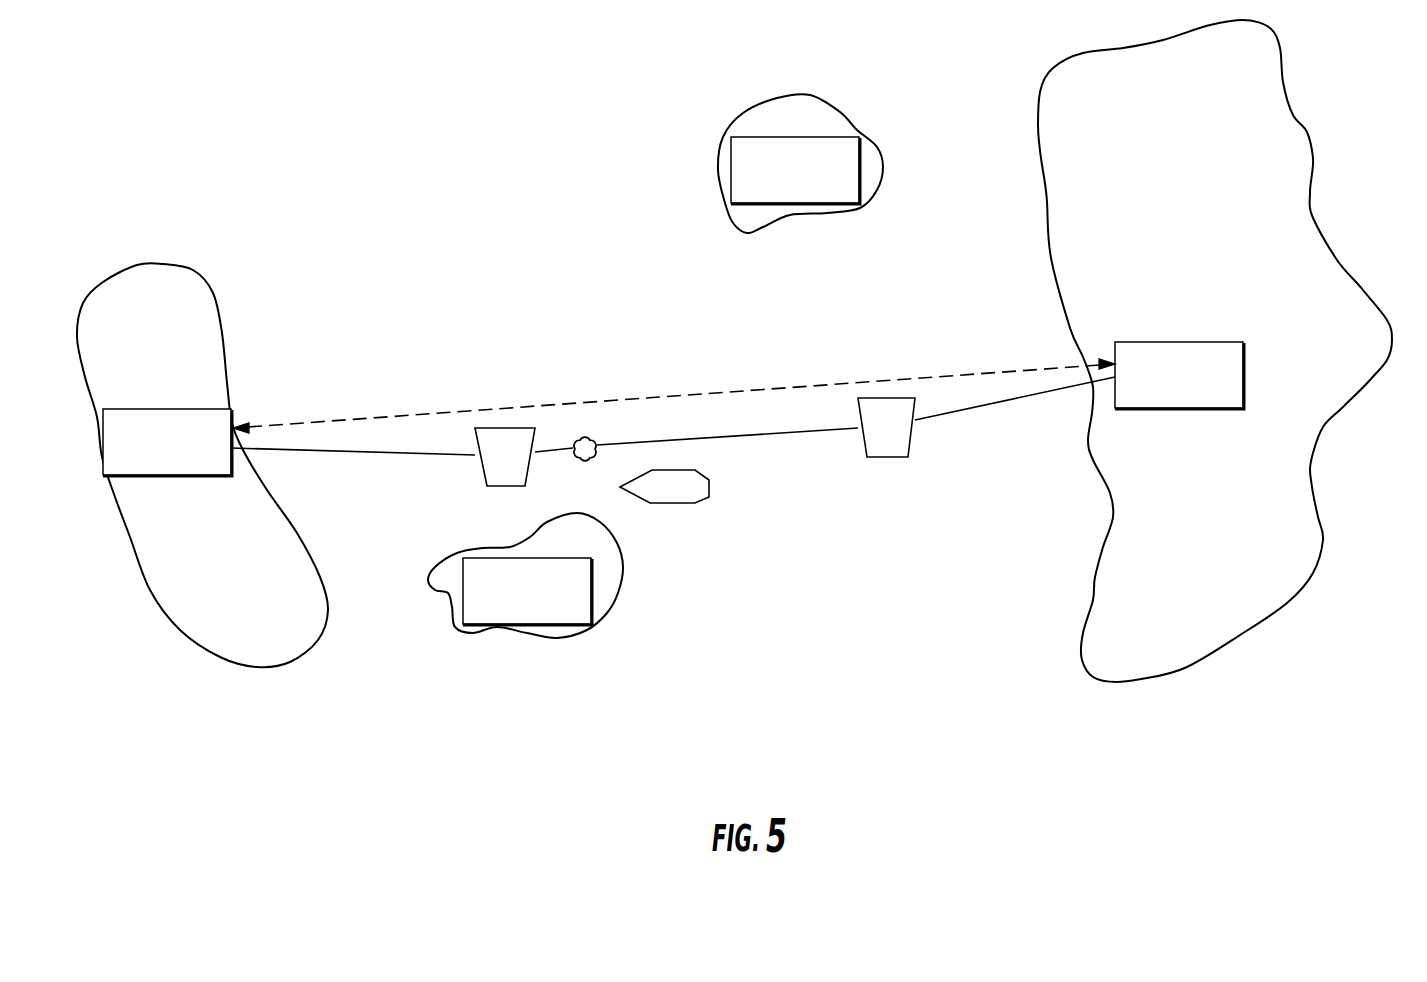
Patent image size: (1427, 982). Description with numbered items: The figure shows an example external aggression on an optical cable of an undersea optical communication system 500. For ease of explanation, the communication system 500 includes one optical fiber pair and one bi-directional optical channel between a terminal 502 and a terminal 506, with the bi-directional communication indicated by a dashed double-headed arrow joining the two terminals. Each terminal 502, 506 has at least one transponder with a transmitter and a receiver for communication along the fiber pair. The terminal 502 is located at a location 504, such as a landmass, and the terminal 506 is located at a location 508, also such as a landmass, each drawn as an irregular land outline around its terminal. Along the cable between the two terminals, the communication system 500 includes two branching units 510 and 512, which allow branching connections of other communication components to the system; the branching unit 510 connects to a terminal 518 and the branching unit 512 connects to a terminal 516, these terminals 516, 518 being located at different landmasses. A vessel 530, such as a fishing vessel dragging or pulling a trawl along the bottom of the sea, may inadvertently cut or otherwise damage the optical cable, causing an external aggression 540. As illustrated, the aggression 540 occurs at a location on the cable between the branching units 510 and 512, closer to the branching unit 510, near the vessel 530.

The undersea optical communication system 500 is at (779, 763).
The terminal 502 is at (167, 441).
The location 504 is at (166, 316).
The terminal 506 is at (1179, 374).
The location 508 is at (1203, 98).
The branching unit 510 is at (505, 458).
The branching unit 512 is at (886, 428).
The terminal 516 is at (885, 398).
The terminal 518 is at (508, 486).
The vessel 530 is at (664, 503).
The external aggression 540 is at (585, 431).